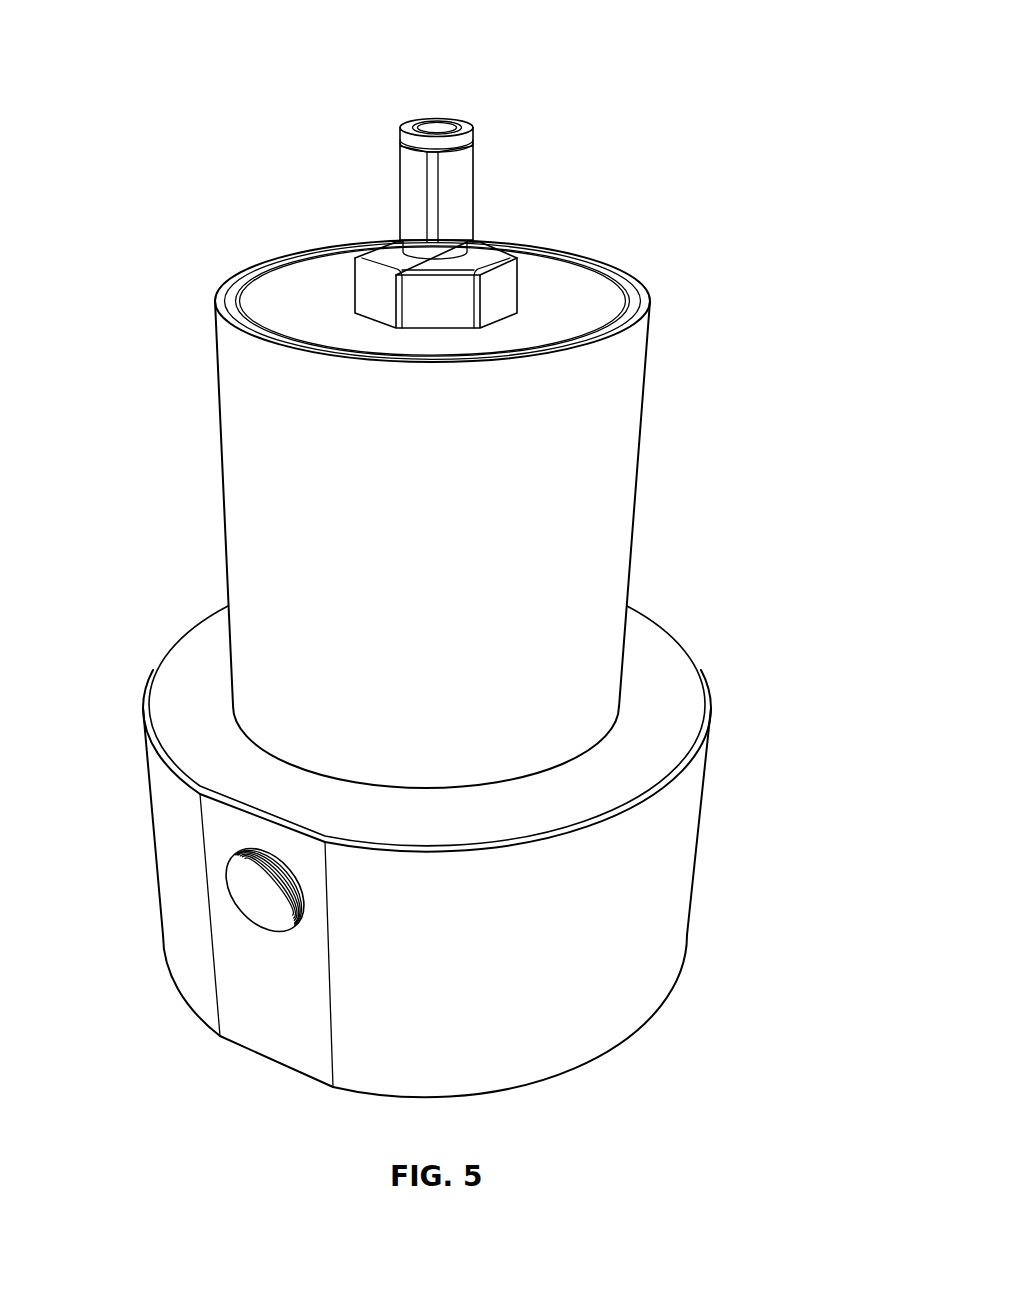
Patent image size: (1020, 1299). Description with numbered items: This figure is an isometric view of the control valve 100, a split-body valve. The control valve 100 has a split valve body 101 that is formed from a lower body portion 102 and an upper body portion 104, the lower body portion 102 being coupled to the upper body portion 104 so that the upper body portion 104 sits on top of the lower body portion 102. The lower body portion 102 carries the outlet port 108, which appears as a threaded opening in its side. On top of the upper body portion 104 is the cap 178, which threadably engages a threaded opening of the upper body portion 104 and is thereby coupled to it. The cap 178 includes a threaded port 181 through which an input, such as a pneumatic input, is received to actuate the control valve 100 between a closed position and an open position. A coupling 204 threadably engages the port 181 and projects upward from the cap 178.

The control valve 100 is at (661, 39).
The split valve body 101 is at (253, 500).
The lower body portion 102 is at (675, 850).
The upper body portion 104 is at (608, 450).
The outlet port 108 is at (250, 907).
The cap 178 is at (547, 285).
The threaded port 181 is at (412, 252).
The coupling 204 is at (442, 202).